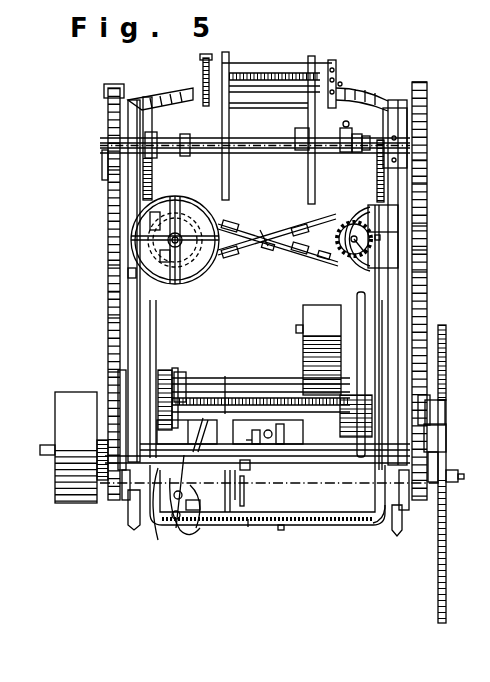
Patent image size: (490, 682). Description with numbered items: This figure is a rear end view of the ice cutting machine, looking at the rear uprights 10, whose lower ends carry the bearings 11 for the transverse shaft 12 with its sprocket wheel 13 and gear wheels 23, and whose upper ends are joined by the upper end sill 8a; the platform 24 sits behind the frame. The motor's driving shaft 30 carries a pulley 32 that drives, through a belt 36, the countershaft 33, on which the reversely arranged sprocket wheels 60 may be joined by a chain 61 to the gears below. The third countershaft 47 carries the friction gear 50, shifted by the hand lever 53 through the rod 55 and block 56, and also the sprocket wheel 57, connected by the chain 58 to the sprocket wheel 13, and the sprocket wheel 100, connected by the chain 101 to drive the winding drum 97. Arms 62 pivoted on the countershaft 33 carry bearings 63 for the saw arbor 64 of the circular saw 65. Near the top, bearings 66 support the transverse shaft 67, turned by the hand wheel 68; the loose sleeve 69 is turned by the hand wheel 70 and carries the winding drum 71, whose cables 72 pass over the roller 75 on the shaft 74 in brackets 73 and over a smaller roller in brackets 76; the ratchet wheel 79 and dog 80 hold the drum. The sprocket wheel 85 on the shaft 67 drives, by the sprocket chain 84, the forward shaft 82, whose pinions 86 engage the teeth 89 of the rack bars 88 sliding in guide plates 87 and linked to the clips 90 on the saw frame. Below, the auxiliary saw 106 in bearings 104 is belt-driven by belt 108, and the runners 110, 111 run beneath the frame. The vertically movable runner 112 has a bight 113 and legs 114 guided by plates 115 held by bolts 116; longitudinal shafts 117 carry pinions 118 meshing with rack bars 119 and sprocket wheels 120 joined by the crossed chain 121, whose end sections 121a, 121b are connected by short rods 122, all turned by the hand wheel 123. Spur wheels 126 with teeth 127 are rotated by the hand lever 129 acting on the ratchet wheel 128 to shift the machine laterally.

The upper end sill 8a is at (370, 95).
The rear upright 10 is at (157, 330).
The bearing 11 is at (125, 500).
The transverse shaft 12 is at (270, 490).
The sprocket wheel 13 is at (106, 490).
The gear wheel 23 is at (328, 540).
The platform 24 is at (360, 455).
The driving shaft 30 is at (300, 328).
The pulley 32 is at (303, 342).
The countershaft 33 is at (268, 432).
The belt 36 is at (303, 370).
The third countershaft 47 is at (250, 392).
The friction gear 50 is at (372, 353).
The hand lever 53 is at (357, 296).
The rod 55 is at (446, 414).
The block 56 is at (446, 390).
The sprocket wheel 57 is at (108, 376).
The chain 58 is at (80, 396).
The sprocket wheel 60 is at (276, 434).
The chain 61 is at (250, 466).
The arm 62 is at (48, 446).
The bearing 63 is at (438, 480).
The saw arbor 64 is at (464, 480).
The circular saw 65 is at (447, 602).
The bearing 66 is at (141, 130).
The transverse shaft 67 is at (428, 130).
The hand wheel 68 is at (428, 183).
The sleeve 69 is at (352, 140).
The hand wheel 70 is at (106, 120).
The winding drum 71 is at (252, 154).
The cable 72 is at (229, 68).
The bracket 73 is at (203, 80).
The shaft 74 is at (343, 84).
The roller 75 is at (283, 70).
The bracket 76 is at (203, 60).
The ratchet wheel 79 is at (157, 157).
The dog 80 is at (152, 160).
The shaft 82 is at (355, 155).
The sprocket chain 84 is at (377, 192).
The sprocket wheel 85 is at (367, 152).
The pinion 86 is at (110, 172).
The guide plate 87 is at (102, 158).
The rack bar 88 is at (108, 262).
The teeth 89 is at (108, 290).
The inverted U-shaped clip 90 is at (126, 398).
The winding drum 97 is at (226, 376).
The sprocket wheel 100 is at (186, 384).
The chain 101 is at (178, 372).
The bearing 104 is at (200, 512).
The auxiliary saw 106 is at (282, 531).
The belt 108 is at (241, 491).
The runner 110 is at (136, 530).
The runner 111 is at (398, 537).
The vertically movable runner 112 is at (376, 526).
The bight 113 is at (248, 528).
The leg 114 is at (172, 372).
The plate 115 is at (108, 312).
The transverse bolt 116 is at (428, 273).
The longitudinal shaft 117 is at (363, 239).
The pinion 118 is at (212, 270).
The rack bar 119 is at (134, 272).
The sprocket wheel 120 is at (190, 226).
The crossed chain 121 is at (236, 226).
The end section 121a is at (322, 260).
The end section 121b is at (240, 255).
The short rod 122 is at (264, 248).
The hand wheel 123 is at (190, 275).
The spur wheel 126 is at (198, 530).
The teeth 127 is at (192, 535).
The ratchet wheel 128 is at (156, 545).
The hand lever 129 is at (203, 432).